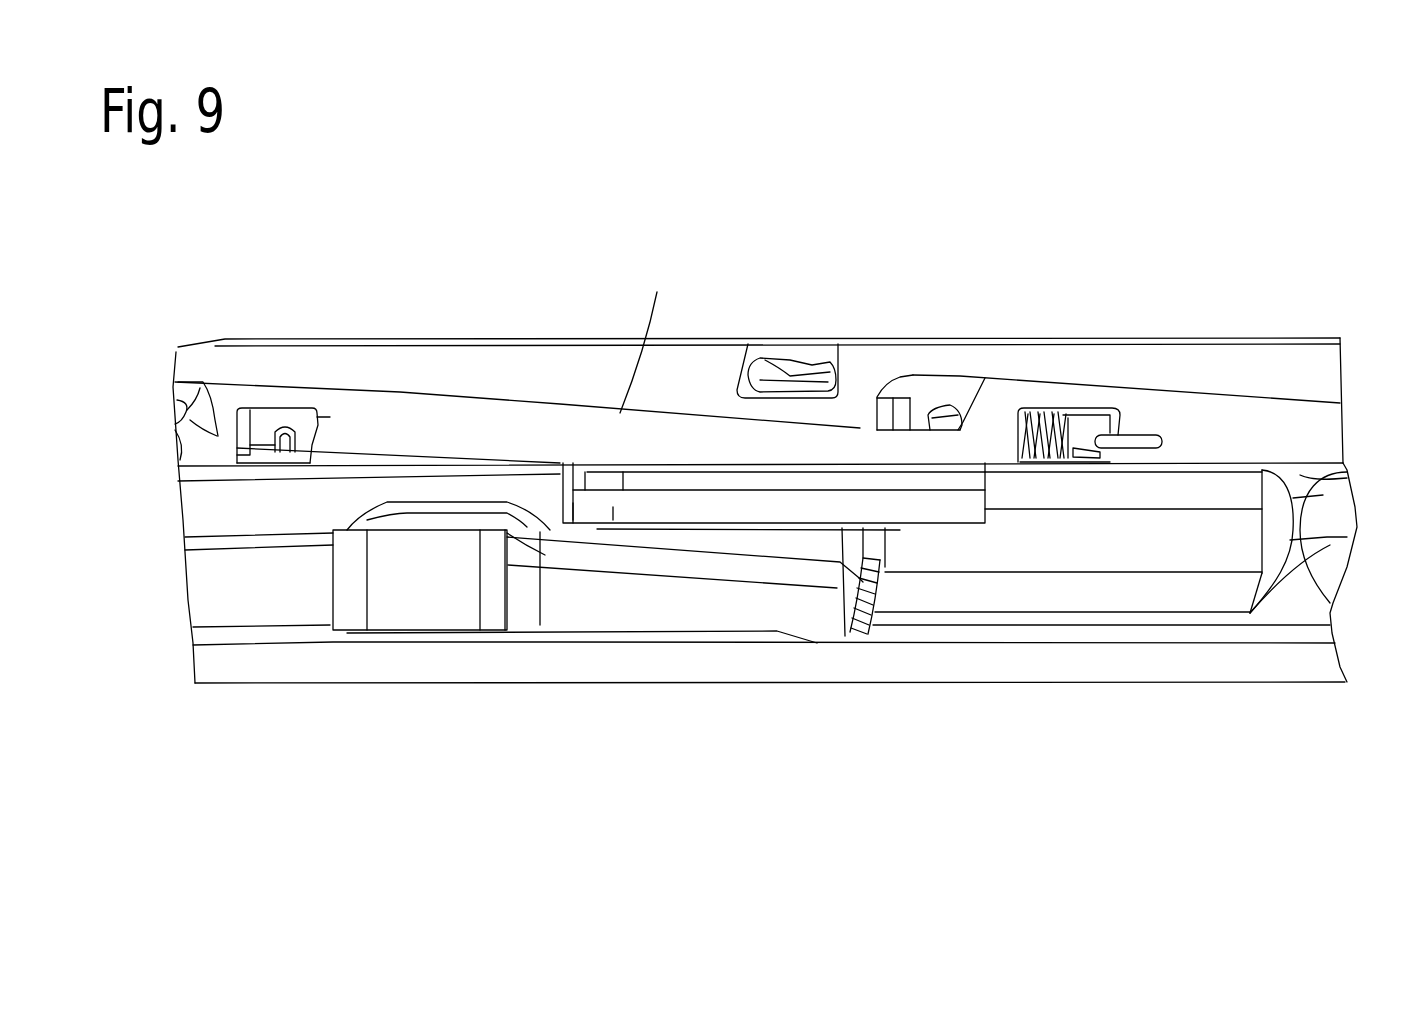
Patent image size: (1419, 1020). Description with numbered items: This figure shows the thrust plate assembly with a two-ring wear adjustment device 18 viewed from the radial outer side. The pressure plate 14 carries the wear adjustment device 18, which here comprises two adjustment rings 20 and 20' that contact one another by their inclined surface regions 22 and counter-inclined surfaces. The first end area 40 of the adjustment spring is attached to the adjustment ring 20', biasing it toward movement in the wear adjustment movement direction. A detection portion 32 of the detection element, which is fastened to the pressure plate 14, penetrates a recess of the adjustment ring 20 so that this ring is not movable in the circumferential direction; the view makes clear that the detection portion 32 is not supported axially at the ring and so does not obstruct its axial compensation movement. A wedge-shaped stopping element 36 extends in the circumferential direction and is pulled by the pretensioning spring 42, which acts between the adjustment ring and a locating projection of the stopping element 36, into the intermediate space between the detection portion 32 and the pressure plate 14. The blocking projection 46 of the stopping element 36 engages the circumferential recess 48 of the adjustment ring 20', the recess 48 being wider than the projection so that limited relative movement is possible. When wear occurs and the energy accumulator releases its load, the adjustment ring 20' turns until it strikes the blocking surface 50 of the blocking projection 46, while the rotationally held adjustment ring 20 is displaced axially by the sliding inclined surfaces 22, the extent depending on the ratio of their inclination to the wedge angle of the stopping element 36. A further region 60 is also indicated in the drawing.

The pressure plate 14 is at (1333, 603).
The wear adjustment device 18 is at (586, 262).
The adjustment ring 20 is at (797, 396).
The adjustment ring 20' is at (204, 354).
The inclined surface regions 22 is at (463, 398).
The detection portion 32 is at (782, 382).
The stopping element 36 is at (932, 398).
The first end area of the adjustment spring 40 is at (1150, 437).
The pretensioning spring 42 is at (1070, 408).
The blocking projection 46 is at (252, 410).
The circumferential recess 48 is at (317, 417).
The circumferential end face 50 is at (237, 448).
The recess 60 is at (763, 350).